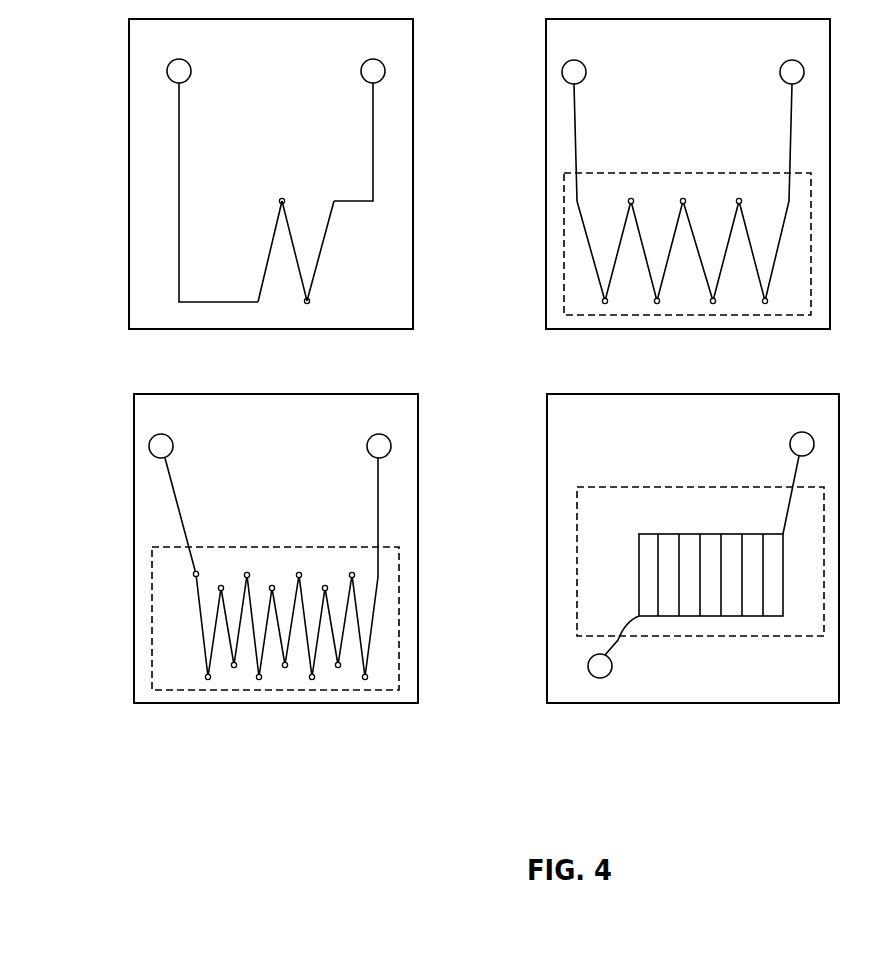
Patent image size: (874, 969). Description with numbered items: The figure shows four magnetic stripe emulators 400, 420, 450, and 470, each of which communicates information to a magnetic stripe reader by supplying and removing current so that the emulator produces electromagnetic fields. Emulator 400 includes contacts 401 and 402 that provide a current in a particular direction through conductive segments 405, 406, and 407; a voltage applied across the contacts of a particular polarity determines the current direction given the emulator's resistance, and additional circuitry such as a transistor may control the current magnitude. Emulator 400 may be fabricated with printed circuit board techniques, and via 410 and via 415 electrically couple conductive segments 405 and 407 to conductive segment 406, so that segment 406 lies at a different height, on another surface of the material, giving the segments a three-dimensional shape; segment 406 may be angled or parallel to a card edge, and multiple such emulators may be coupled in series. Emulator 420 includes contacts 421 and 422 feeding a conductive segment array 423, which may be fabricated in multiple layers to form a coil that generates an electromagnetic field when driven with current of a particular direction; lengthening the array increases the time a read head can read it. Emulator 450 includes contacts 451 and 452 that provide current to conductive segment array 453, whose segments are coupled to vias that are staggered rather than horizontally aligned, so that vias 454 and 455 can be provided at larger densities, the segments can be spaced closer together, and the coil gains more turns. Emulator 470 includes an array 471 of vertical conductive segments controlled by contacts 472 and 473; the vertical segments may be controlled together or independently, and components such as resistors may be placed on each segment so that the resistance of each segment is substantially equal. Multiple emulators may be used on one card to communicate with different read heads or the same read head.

The emulator 400 is at (129, 66).
The contact 401 is at (184, 59).
The contact 402 is at (377, 59).
The conductive segment 405 is at (260, 283).
The conductive segment 406 is at (310, 215).
The conductive segment 407 is at (325, 243).
The via 410 is at (281, 197).
The via 415 is at (338, 290).
The emulator 420 is at (546, 66).
The contact 421 is at (588, 62).
The contact 422 is at (797, 60).
The conductive segment array 423 is at (662, 172).
The emulator 450 is at (134, 440).
The contact 451 is at (174, 436).
The contact 452 is at (385, 437).
The conductive segment array 453 is at (250, 546).
The via 454 is at (299, 572).
The via 455 is at (334, 560).
The emulator 470 is at (547, 440).
The array 471 is at (675, 486).
The contact 472 is at (807, 432).
The contact 473 is at (594, 662).